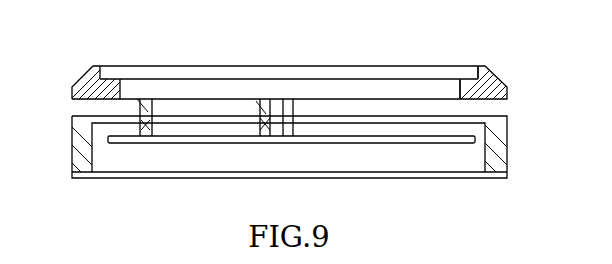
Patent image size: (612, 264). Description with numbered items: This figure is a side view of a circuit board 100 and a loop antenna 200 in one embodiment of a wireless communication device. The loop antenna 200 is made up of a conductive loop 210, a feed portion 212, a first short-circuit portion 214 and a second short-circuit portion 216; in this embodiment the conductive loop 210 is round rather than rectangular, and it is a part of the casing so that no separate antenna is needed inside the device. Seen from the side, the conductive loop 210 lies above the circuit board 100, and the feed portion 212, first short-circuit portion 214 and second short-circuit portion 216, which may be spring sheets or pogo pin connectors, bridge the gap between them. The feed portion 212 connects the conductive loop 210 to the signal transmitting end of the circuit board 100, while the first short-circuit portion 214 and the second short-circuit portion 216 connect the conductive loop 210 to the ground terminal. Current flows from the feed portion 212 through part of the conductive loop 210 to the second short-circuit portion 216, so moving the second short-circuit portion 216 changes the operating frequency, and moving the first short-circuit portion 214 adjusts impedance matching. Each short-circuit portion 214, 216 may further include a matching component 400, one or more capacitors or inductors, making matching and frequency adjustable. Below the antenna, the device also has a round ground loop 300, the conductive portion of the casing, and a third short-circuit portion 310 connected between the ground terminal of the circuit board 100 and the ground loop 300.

The circuit board 100 is at (346, 135).
The loop antenna 200 is at (54, 80).
The conductive loop 210 is at (474, 134).
The feed portion 212 is at (292, 99).
The first short-circuit portion 214 is at (253, 99).
The second short-circuit portion 216 is at (133, 100).
The ground loop 300 is at (509, 128).
The third short-circuit portion 310 is at (462, 94).
The matching component 400 is at (153, 129).